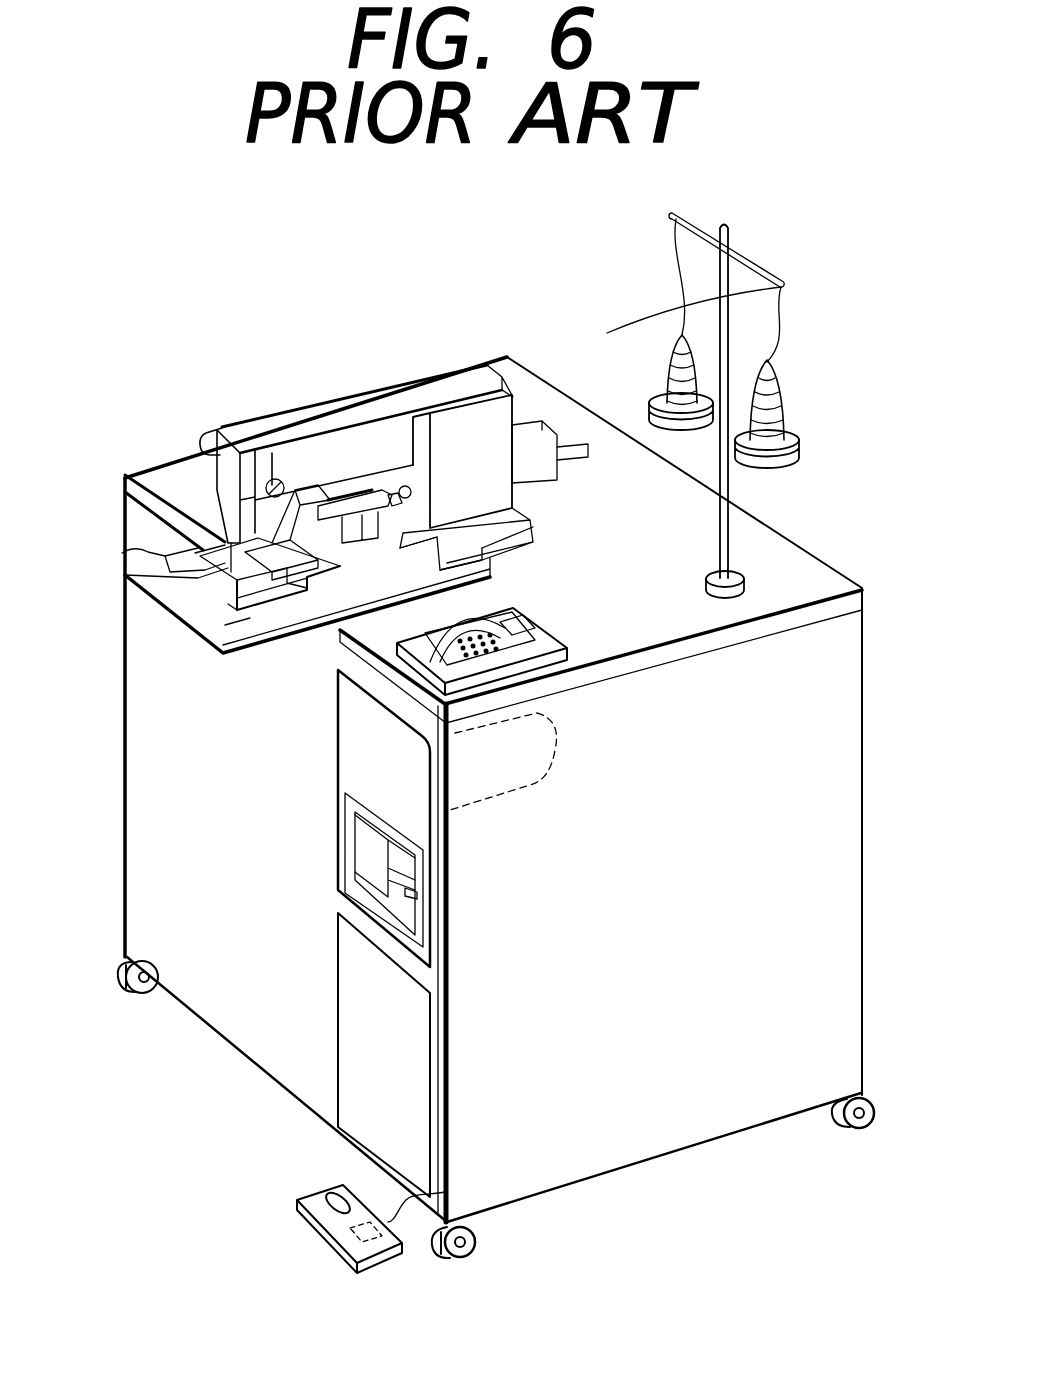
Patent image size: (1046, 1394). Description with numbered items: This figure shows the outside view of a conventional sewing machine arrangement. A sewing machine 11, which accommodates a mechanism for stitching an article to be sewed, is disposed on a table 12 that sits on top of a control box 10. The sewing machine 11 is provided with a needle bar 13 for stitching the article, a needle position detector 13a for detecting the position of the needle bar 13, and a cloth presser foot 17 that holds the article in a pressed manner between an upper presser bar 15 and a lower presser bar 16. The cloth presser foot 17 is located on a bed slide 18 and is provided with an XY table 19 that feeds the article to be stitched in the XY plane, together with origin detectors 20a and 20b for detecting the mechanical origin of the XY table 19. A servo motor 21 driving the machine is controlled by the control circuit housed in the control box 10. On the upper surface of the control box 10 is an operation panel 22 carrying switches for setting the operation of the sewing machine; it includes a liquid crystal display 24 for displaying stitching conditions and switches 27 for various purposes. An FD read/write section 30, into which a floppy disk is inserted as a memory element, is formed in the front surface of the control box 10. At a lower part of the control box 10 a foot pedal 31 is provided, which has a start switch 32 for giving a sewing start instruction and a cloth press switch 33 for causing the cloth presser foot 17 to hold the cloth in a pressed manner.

The control box 10 is at (243, 900).
The sewing machine 11 is at (390, 400).
The table 12 is at (172, 477).
The needle bar 13 is at (212, 648).
The needle position detector 13a is at (212, 420).
The upper presser bar 15 is at (187, 628).
The lower presser bar 16 is at (122, 553).
The cloth presser foot 17 is at (355, 545).
The bed slide 18 is at (230, 625).
The XY table 19 is at (345, 565).
The origin detector 20a is at (483, 570).
The origin detector 20b is at (533, 557).
The servo motor 21 is at (547, 780).
The operation panel 22 is at (528, 610).
The liquid crystal display 24 is at (543, 633).
The switches 27 is at (487, 655).
The FD read/write section 30 is at (412, 905).
The foot pedal 31 is at (307, 1228).
The start switch 32 is at (392, 1263).
The cloth press switch 33 is at (323, 1190).